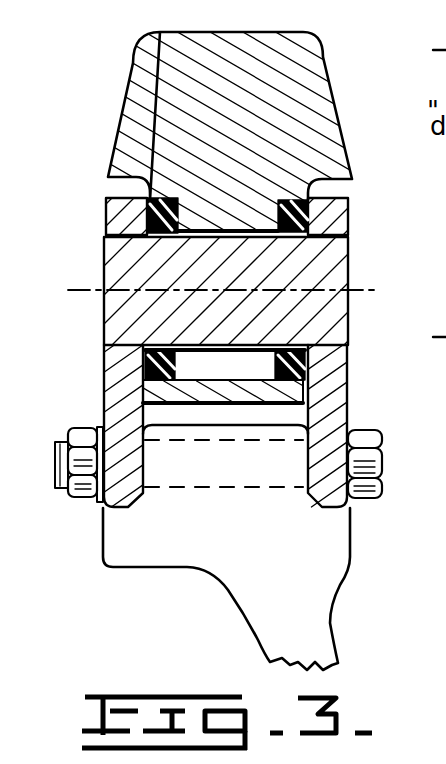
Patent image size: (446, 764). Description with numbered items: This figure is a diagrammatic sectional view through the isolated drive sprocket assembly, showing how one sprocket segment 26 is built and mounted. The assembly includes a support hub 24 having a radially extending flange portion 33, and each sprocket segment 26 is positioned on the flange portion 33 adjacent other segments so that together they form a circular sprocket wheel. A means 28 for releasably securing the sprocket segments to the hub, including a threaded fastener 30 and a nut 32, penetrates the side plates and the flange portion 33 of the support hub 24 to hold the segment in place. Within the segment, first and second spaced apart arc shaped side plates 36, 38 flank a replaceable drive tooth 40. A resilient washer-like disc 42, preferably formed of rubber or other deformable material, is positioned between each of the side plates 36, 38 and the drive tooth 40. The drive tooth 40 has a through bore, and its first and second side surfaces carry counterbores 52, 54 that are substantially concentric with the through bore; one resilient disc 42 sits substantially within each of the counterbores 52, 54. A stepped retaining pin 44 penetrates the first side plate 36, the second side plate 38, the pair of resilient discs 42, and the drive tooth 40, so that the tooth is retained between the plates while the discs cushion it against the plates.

The support hub 24 is at (304, 609).
The sprocket segment 26 is at (102, 159).
The means for releasably securing the sprocket segments to the support hub 28 is at (372, 423).
The threaded fastener 30 is at (372, 460).
The nut 32 is at (83, 438).
The flange portion 33 is at (222, 464).
The first side plate 36 is at (343, 230).
The second side plate 38 is at (110, 220).
The replaceable drive tooth 40 is at (323, 83).
The resilient washer-like disc 42 is at (150, 248).
The stepped retaining pin 44 is at (110, 328).
The first counterbore 52 is at (280, 200).
The second counterbore 54 is at (180, 203).